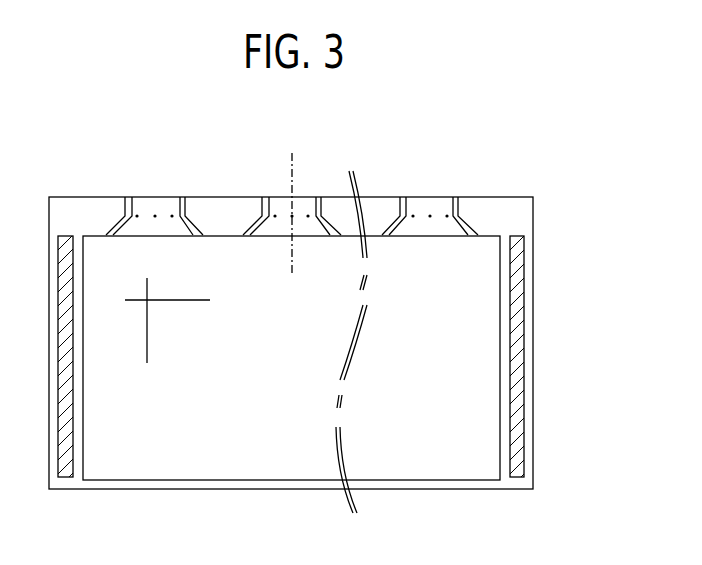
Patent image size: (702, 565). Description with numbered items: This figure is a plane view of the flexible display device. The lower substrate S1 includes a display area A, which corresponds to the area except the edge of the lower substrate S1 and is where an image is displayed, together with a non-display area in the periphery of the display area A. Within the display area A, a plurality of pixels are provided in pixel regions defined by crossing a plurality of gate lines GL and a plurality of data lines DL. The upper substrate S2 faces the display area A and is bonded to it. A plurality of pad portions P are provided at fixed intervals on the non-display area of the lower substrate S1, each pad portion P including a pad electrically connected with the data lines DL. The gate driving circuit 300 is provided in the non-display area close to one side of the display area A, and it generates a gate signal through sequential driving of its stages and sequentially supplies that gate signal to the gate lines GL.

The lower substrate S1 is at (522, 213).
The upper substrate S2 is at (477, 332).
The gate driving circuit 300 is at (65, 470).
The pad portion P is at (156, 196).
The display area A is at (290, 153).
The data line DL is at (147, 310).
The gate line GL is at (152, 300).